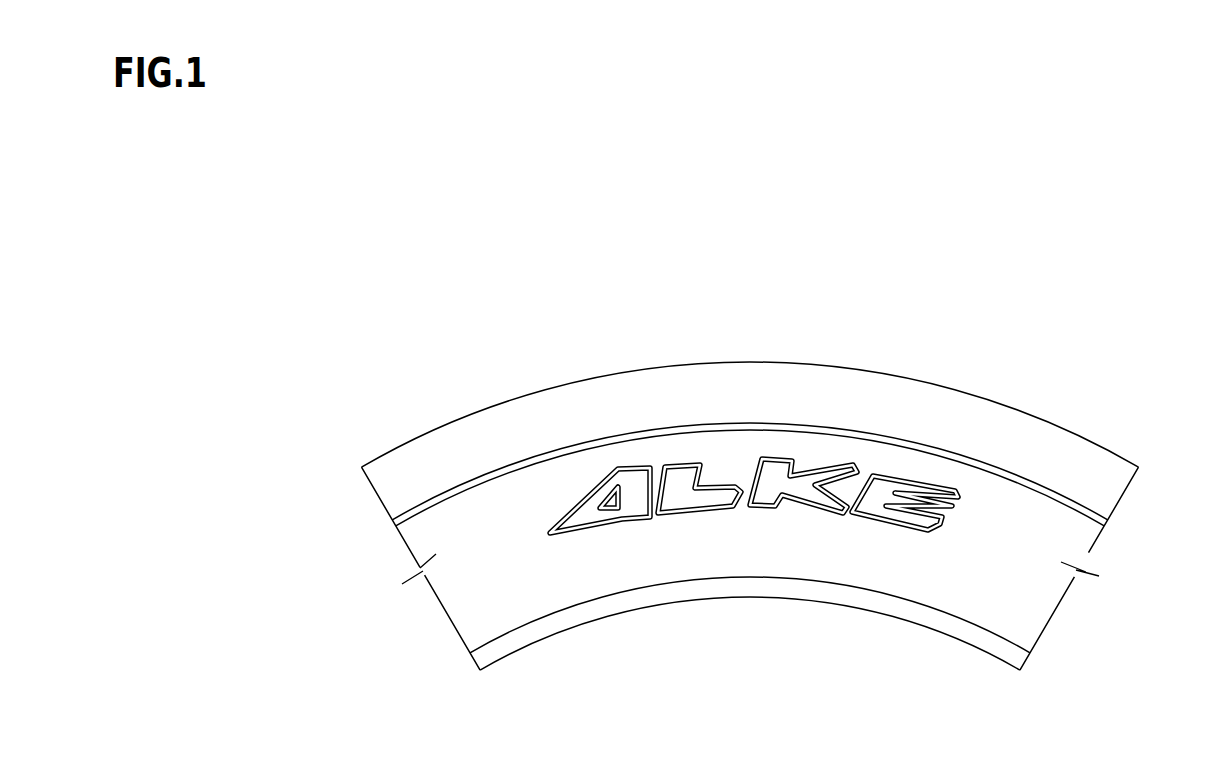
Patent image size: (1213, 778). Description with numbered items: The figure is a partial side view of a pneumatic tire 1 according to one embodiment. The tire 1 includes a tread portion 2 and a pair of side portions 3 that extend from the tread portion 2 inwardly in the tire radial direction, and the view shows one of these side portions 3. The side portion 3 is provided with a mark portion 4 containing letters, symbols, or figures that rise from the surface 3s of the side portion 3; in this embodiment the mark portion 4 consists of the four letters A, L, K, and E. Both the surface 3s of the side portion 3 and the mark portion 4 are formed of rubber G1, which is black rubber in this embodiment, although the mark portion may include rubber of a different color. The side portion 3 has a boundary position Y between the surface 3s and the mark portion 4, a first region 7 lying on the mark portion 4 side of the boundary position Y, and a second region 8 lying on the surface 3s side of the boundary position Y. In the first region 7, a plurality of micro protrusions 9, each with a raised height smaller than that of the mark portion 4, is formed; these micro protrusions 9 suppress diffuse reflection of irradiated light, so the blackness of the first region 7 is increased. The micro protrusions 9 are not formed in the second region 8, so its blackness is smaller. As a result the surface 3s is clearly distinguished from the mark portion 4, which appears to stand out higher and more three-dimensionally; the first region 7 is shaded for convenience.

The tire 1 is at (1042, 335).
The tread portion 2 is at (1062, 428).
The side portion 3 is at (530, 500).
The surface of the side portion 3s is at (1055, 525).
The mark portion 4 is at (620, 471).
The first region 7 is at (913, 472).
The second region 8 is at (750, 548).
The micro protrusions 9 is at (682, 463).
The rubber G1 is at (805, 470).
The boundary position Y is at (888, 526).